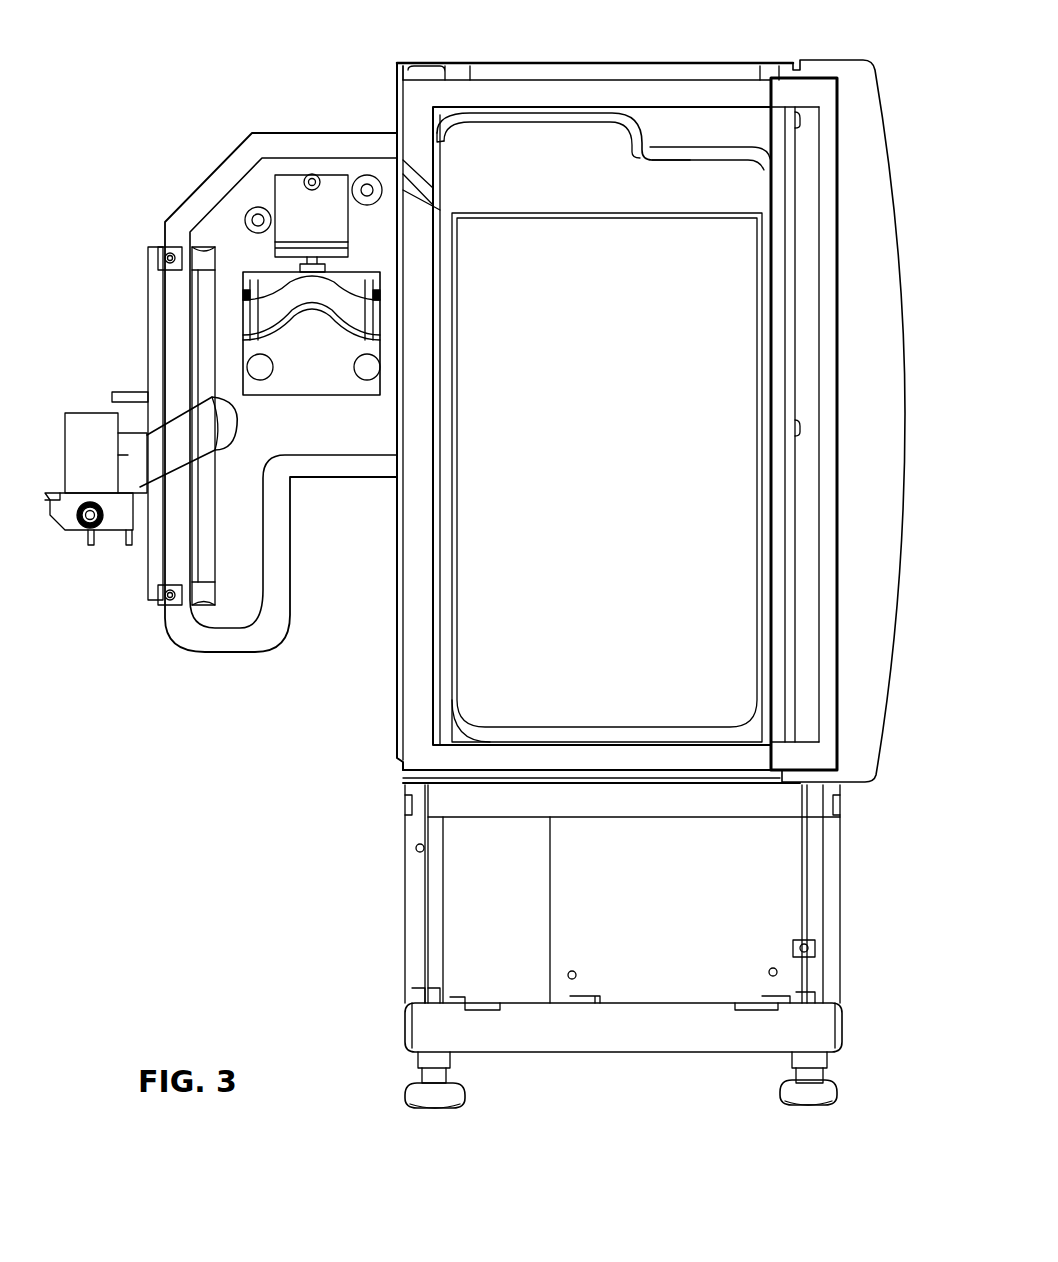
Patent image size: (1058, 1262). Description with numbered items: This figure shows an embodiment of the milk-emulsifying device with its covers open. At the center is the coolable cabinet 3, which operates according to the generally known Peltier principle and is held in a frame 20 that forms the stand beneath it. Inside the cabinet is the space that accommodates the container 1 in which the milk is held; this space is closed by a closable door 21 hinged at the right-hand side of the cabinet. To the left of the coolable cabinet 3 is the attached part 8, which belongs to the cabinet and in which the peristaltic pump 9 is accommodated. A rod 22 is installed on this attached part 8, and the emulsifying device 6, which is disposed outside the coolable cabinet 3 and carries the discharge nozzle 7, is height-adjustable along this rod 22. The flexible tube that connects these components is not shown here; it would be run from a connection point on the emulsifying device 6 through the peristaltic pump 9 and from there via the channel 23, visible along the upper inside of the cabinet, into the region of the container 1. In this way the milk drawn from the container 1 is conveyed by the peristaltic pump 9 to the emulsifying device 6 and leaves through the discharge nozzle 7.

The container 1 is at (473, 695).
The coolable cabinet 3 is at (418, 640).
The emulsifying device 6 is at (92, 396).
The discharge nozzle 7 is at (93, 545).
The attached part 8 is at (226, 172).
The peristaltic pump 9 is at (257, 268).
The frame 20 is at (415, 912).
The closable door 21 is at (877, 108).
The rod 22 is at (200, 522).
The channel 23 is at (527, 130).